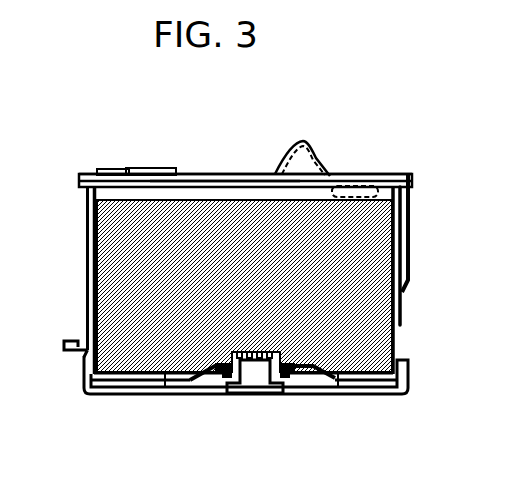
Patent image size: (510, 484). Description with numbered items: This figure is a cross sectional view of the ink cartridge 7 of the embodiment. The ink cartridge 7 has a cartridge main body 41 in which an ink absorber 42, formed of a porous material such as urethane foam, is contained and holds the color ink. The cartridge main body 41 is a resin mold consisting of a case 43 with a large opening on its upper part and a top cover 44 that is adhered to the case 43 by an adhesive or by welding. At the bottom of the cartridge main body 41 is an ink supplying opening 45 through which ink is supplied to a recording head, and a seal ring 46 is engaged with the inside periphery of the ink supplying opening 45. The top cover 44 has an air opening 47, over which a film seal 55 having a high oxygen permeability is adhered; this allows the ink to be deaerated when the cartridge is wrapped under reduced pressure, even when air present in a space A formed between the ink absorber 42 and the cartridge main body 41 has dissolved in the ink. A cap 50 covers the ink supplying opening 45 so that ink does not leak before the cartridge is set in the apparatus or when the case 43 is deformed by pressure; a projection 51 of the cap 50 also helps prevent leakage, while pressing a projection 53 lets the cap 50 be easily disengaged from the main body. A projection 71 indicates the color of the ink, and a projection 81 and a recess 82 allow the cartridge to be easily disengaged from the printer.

The ink cartridge 7 is at (430, 170).
The cartridge main body 41 is at (70, 277).
The ink absorber 42 is at (360, 308).
The case 43 is at (90, 222).
The top cover 44 is at (233, 174).
The ink supplying opening 45 is at (250, 351).
The seal ring 46 is at (228, 355).
The air opening 47 is at (127, 171).
The cap 50 is at (145, 395).
The projection of the cap 51 is at (260, 378).
The projection 53 is at (77, 341).
The film seal 55 is at (111, 172).
The projection 71 is at (405, 243).
The projection 81 is at (325, 152).
The recess 82 is at (348, 192).
The space A is at (182, 188).